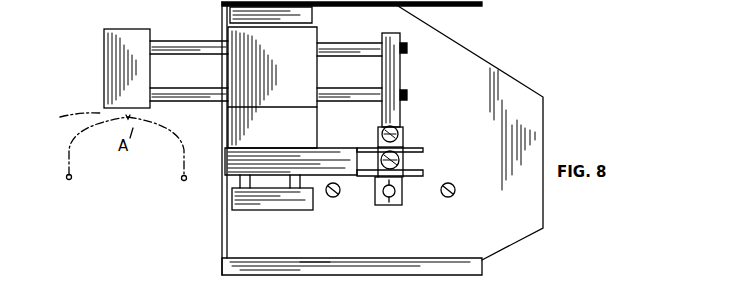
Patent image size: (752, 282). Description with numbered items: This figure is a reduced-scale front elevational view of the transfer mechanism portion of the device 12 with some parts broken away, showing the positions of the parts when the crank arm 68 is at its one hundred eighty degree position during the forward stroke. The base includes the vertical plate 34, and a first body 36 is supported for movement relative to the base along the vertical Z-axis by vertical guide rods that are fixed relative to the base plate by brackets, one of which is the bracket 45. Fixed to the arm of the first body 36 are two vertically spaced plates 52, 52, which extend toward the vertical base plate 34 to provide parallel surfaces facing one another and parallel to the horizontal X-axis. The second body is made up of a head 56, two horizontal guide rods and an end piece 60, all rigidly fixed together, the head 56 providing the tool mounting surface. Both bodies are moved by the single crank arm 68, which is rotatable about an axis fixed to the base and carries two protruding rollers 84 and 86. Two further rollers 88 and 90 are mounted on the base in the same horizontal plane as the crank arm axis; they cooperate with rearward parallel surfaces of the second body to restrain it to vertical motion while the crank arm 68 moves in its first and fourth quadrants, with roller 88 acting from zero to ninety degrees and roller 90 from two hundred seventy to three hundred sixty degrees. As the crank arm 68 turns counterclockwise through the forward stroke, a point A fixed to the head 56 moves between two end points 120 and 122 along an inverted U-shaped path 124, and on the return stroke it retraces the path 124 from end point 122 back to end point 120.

The device 12 is at (474, 40).
The vertical plate 34 is at (498, 90).
The first body 36 is at (305, 42).
The bracket 45 is at (258, 200).
The plates 52 is at (418, 148).
The head 56 is at (143, 28).
The end piece 60 is at (397, 76).
The crank arm 68 is at (410, 188).
The roller 84 is at (403, 159).
The roller 86 is at (398, 125).
The roller 88 is at (456, 190).
The roller 90 is at (340, 196).
The end point 120 is at (185, 181).
The end point 122 is at (68, 180).
The inverted U-shaped path 124 is at (106, 144).